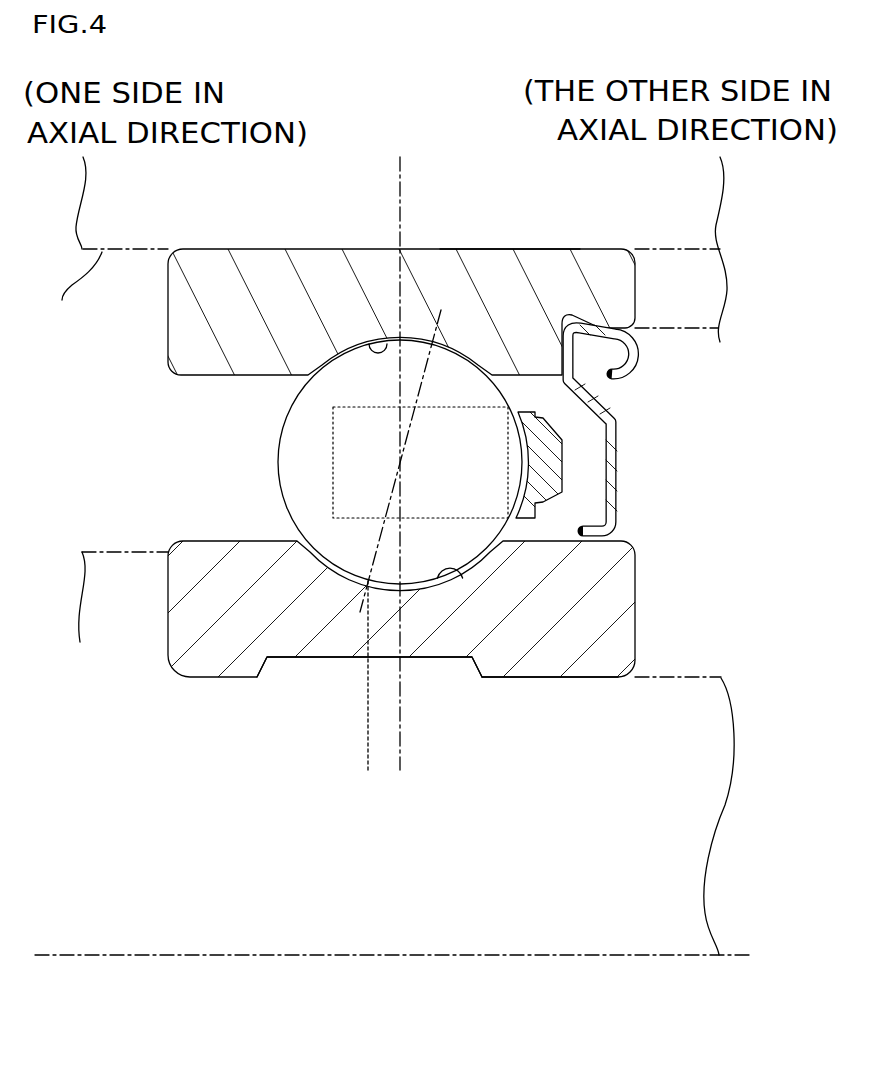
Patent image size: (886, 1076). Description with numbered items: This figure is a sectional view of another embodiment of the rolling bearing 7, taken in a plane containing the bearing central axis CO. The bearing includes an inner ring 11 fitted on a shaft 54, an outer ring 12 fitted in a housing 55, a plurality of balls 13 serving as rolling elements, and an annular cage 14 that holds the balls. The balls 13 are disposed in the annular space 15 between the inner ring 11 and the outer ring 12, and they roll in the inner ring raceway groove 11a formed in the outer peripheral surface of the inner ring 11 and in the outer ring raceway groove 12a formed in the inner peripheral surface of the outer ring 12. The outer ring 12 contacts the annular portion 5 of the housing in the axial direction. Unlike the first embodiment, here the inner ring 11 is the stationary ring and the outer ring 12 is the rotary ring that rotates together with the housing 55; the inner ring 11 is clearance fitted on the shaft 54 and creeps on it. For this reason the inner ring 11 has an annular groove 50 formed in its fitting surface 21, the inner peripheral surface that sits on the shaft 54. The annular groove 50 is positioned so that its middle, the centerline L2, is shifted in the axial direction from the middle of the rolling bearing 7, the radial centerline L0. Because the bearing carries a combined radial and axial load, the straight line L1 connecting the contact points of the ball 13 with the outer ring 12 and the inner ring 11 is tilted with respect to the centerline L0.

The annular portion 5 is at (716, 273).
The rolling bearing 7 is at (513, 248).
The inner ring 11 is at (615, 582).
The inner ring raceway groove 11a is at (462, 573).
The outer ring 12 is at (618, 293).
The outer ring raceway groove 12a is at (387, 344).
The ball 13 is at (459, 375).
The cage 14 is at (563, 443).
The annular space 15 is at (198, 466).
The fitting surface 21 is at (543, 678).
The annular groove 50 is at (298, 658).
The shaft 54 is at (700, 676).
The housing 55 is at (108, 242).
The centerline L0 is at (402, 752).
The straight line L1 is at (412, 417).
The centerline of annular groove L2 is at (368, 752).
The bearing central axis CO is at (574, 957).